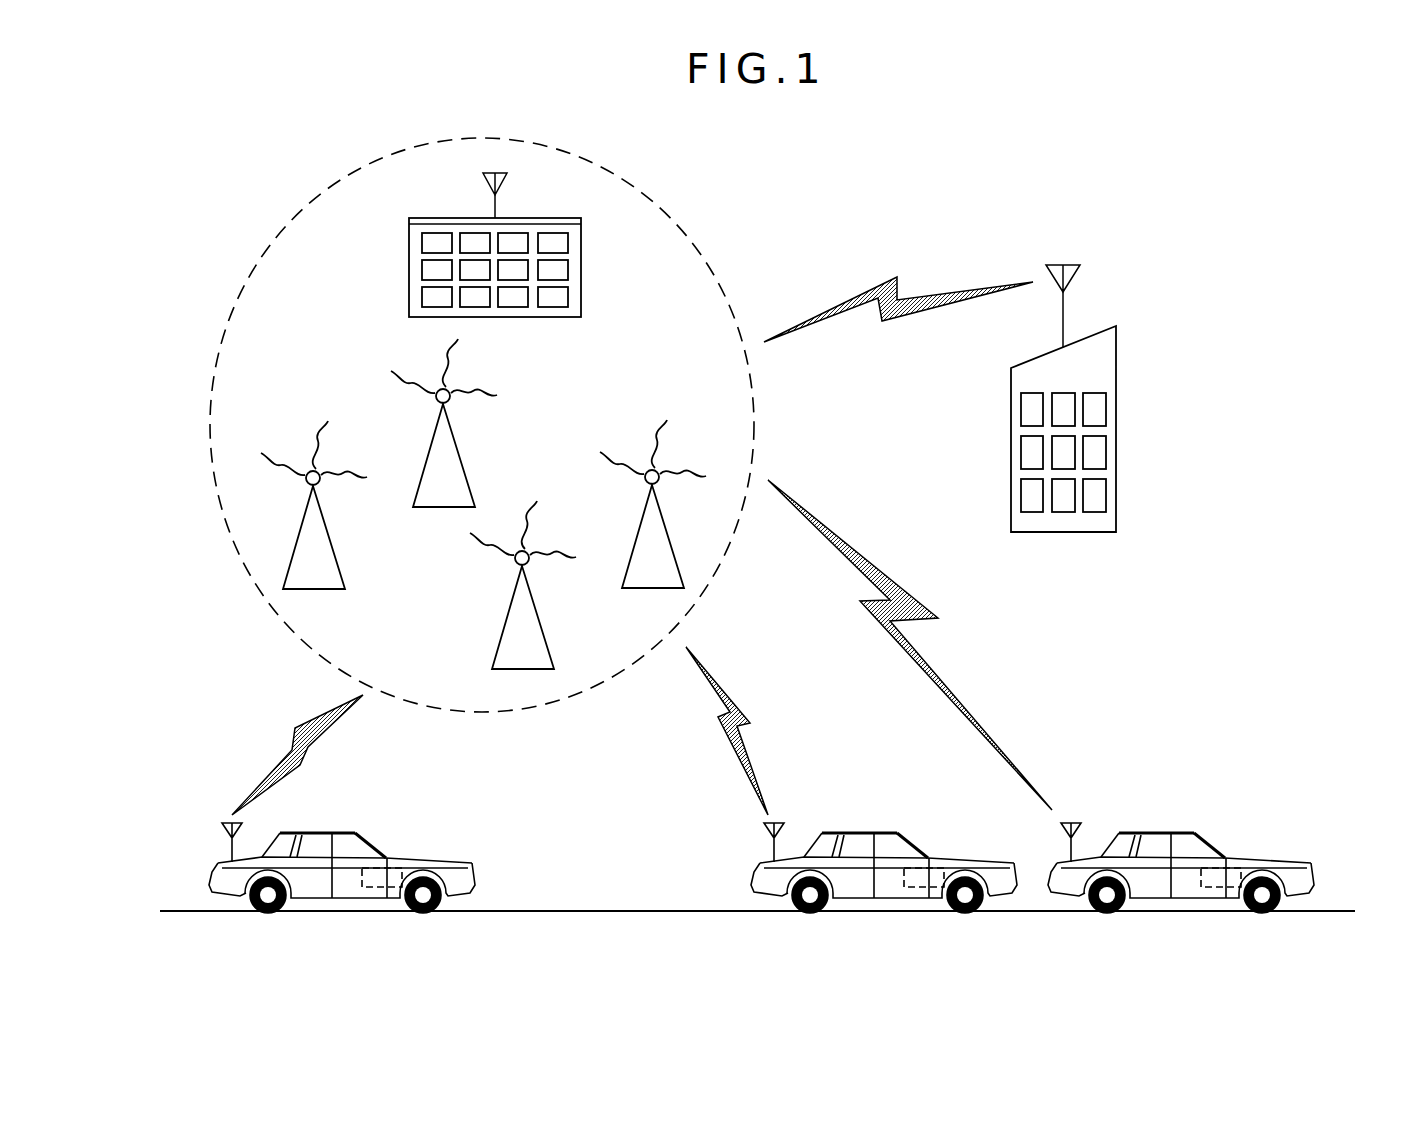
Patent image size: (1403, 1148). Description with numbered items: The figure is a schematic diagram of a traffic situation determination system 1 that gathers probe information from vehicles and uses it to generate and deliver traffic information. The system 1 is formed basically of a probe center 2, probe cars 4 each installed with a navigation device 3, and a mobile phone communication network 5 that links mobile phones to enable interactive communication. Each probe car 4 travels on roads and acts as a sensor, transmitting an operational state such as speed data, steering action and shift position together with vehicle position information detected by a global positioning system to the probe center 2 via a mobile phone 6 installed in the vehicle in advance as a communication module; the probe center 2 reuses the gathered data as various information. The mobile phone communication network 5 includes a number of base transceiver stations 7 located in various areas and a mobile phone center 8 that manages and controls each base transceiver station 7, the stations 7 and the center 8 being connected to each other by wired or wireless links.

The traffic situation determination system 1 is at (923, 485).
The probe center 2 is at (1100, 352).
The navigation device 3 is at (395, 860).
The probe car 4 is at (320, 832).
The mobile phone communication network 5 is at (662, 202).
The mobile phone 6 is at (222, 831).
The base transceiver station 7 is at (338, 568).
The mobile phone center 8 is at (572, 254).